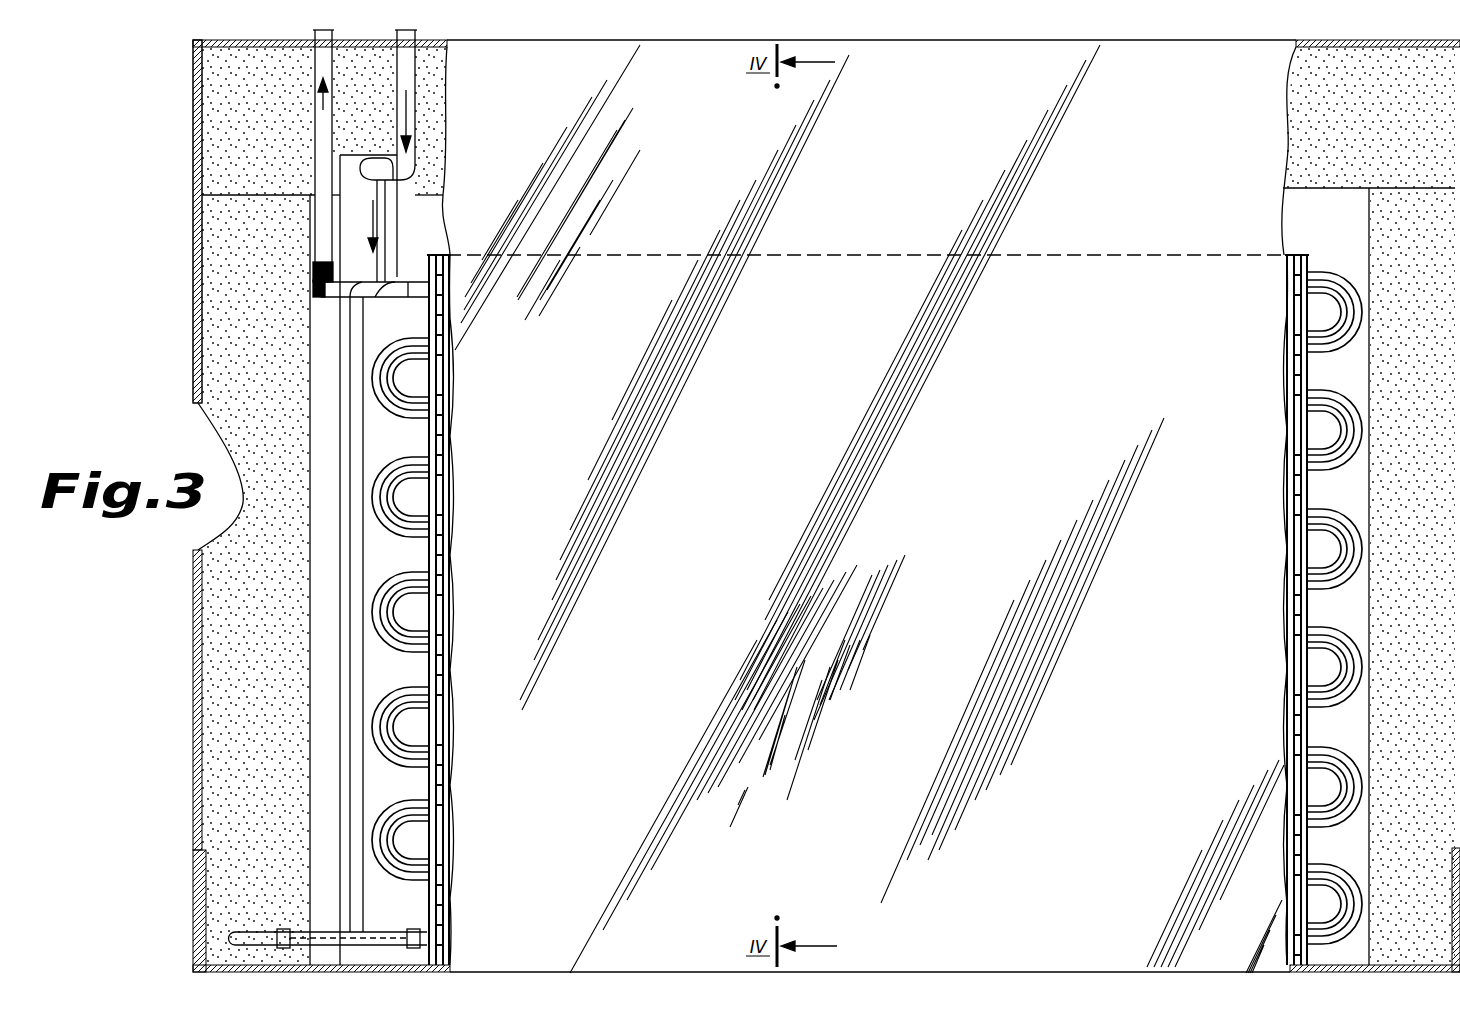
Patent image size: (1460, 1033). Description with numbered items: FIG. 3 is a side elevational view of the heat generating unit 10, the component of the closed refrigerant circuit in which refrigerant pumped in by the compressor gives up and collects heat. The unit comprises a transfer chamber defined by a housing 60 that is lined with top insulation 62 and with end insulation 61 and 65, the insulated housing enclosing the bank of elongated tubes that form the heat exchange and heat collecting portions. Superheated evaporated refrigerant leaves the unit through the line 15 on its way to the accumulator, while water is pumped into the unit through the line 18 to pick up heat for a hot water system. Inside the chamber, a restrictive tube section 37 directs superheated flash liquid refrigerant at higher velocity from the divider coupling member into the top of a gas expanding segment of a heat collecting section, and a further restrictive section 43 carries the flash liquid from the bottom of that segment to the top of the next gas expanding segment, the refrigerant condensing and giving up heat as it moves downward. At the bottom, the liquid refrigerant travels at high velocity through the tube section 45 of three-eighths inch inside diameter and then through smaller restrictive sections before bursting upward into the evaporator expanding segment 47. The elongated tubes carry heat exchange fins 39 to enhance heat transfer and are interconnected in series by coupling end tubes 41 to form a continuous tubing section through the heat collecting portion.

The heat generating unit 10 is at (150, 280).
The line 15 is at (318, 85).
The line 18 is at (405, 75).
The restrictive tube section 37 is at (388, 226).
The heat exchange fins 39 is at (427, 658).
The coupling end tubes 41 is at (403, 808).
The restrictive section 43 is at (355, 578).
The tube section 45 is at (233, 925).
The evaporator expanding segment 47 is at (330, 300).
The housing 60 is at (193, 170).
The end insulation 61 is at (237, 348).
The top insulation 62 is at (232, 108).
The end insulation 65 is at (1395, 480).